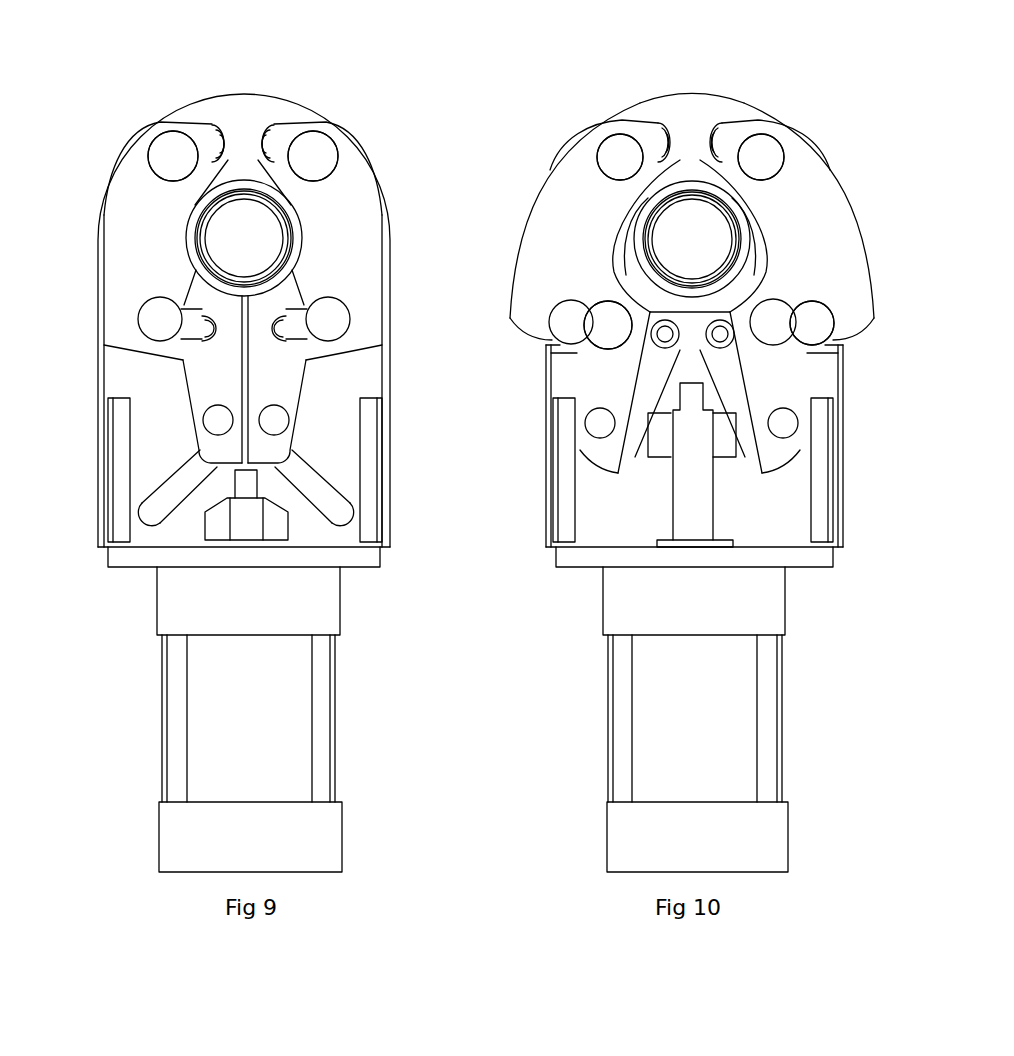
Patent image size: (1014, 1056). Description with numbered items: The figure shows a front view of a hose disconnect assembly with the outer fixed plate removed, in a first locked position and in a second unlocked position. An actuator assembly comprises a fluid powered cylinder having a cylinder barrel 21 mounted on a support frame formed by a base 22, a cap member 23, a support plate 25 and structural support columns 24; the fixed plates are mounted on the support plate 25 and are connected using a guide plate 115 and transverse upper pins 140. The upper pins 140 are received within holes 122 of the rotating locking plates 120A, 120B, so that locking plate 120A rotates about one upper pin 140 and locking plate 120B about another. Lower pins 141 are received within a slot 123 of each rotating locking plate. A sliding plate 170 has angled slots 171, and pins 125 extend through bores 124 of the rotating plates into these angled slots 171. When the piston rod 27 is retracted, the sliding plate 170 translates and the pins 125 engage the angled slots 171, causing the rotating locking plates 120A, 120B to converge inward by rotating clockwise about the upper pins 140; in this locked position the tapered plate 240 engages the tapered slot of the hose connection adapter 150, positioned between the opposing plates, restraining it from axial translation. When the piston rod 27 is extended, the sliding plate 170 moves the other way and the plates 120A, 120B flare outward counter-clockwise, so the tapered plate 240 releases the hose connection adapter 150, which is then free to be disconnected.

In FIG. 9, the hose connection adapter 150 is at (193, 220).
In FIG. 10, the hose connection adapter 150 is at (689, 188).
In FIG. 9, the holes 122 is at (165, 148).
In FIG. 9, the upper pins 140 is at (177, 147).
In FIG. 10, the upper pins 140 is at (617, 152).
In FIG. 9, the rotating locking plate 120A is at (363, 240).
In FIG. 10, the rotating locking plate 120A is at (800, 195).
In FIG. 9, the rotating locking plate 120B is at (118, 246).
In FIG. 10, the rotating locking plate 120B is at (575, 176).
In FIG. 9, the slot 123 is at (190, 307).
In FIG. 10, the slot 123 is at (573, 307).
In FIG. 9, the lower pins 141 is at (152, 325).
In FIG. 10, the lower pins 141 is at (598, 328).
In FIG. 9, the bores 124 is at (213, 420).
In FIG. 10, the bores 124 is at (598, 438).
In FIG. 9, the pins 125 is at (204, 420).
In FIG. 10, the pins 125 is at (598, 427).
In FIG. 9, the sliding plate 170 is at (142, 467).
In FIG. 10, the sliding plate 170 is at (637, 437).
In FIG. 9, the angled slots 171 is at (157, 513).
In FIG. 10, the angled slots 171 is at (645, 372).
In FIG. 9, the piston rod 27 is at (251, 523).
In FIG. 10, the piston rod 27 is at (707, 503).
In FIG. 9, the support plate 25 is at (370, 553).
In FIG. 10, the support plate 25 is at (582, 567).
In FIG. 9, the cap member 23 is at (170, 612).
In FIG. 10, the cap member 23 is at (767, 613).
In FIG. 9, the cylinder barrel 21 is at (295, 740).
In FIG. 10, the cylinder barrel 21 is at (738, 725).
In FIG. 9, the structural support columns 24 is at (175, 747).
In FIG. 10, the structural support columns 24 is at (622, 722).
In FIG. 9, the base 22 is at (327, 843).
In FIG. 10, the base 22 is at (760, 848).
In FIG. 10, the tapered plate 240 is at (622, 250).
In FIG. 10, the guide plate 115 is at (563, 507).